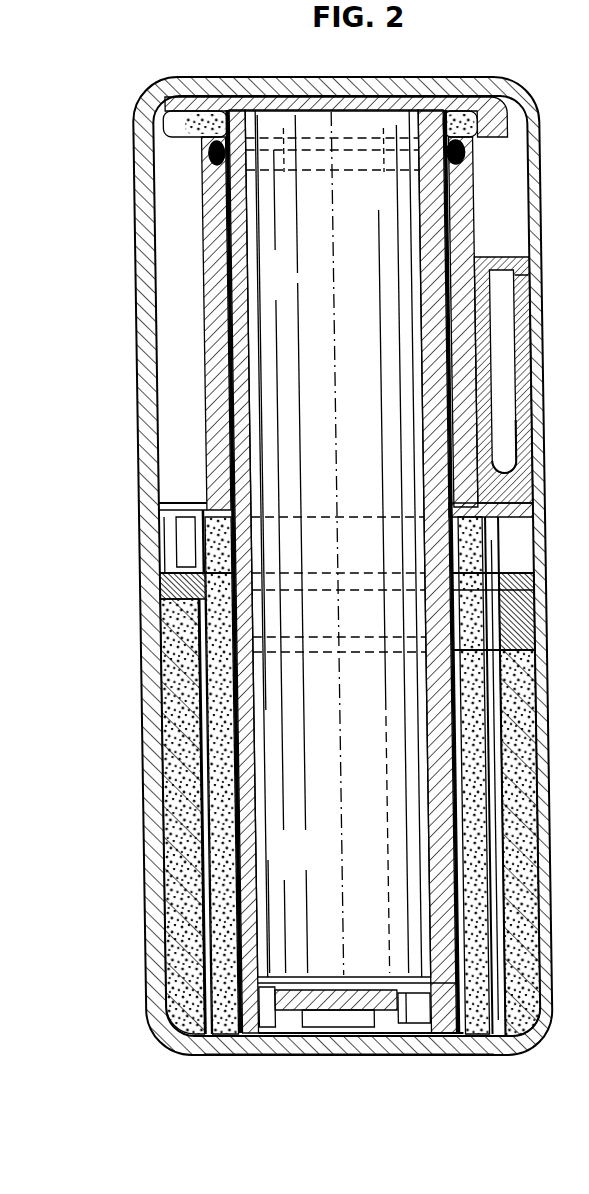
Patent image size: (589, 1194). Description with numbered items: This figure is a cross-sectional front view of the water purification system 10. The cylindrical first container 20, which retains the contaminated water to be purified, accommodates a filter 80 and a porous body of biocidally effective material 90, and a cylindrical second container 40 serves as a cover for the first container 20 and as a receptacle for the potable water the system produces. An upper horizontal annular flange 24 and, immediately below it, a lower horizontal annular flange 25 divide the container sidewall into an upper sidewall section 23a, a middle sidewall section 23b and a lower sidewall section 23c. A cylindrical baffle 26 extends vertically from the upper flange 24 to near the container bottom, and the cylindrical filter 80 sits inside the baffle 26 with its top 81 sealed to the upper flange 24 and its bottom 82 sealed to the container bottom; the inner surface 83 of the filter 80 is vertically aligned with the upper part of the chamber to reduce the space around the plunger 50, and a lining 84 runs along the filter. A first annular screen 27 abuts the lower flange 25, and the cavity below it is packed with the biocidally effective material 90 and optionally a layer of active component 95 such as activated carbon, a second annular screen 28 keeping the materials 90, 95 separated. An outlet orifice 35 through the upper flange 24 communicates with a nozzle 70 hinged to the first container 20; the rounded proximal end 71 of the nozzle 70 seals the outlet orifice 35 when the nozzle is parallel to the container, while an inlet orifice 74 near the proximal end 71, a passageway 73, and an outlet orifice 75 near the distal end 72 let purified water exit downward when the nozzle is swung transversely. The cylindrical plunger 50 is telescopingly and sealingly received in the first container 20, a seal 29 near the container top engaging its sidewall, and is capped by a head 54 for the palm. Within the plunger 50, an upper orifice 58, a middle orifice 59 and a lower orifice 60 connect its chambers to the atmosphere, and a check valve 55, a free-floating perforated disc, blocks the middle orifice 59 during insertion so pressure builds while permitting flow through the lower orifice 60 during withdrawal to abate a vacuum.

The system 10 is at (62, 205).
The first container 20 is at (135, 663).
The upper sidewall section 23a is at (196, 302).
The middle sidewall section 23b is at (165, 528).
The lower sidewall section 23c is at (153, 781).
The upper horizontal annular flange 24 is at (180, 503).
The lower horizontal annular flange 25 is at (160, 575).
The cylindrical baffle 26 is at (200, 946).
The first annular screen 27 is at (160, 603).
The second annular screen 28 is at (536, 645).
The seal 29 is at (462, 153).
The outlet orifice 35 is at (529, 522).
The second container 40 is at (133, 400).
The plunger 50 is at (222, 250).
The head 54 is at (350, 80).
The check valve 55 is at (397, 994).
The upper orifice 58 is at (410, 125).
The middle orifice 59 is at (337, 986).
The lower orifice 60 is at (357, 1030).
The nozzle 70 is at (529, 402).
The proximal end 71 is at (522, 452).
The distal end 72 is at (497, 257).
The passageway 73 is at (500, 372).
The inlet orifice 74 is at (527, 478).
The outlet orifice 75 is at (528, 282).
The filter 80 is at (238, 862).
The top 81 is at (242, 517).
The bottom 82 is at (227, 1056).
The inner surface 83 is at (418, 688).
The lining 84 is at (250, 890).
The porous body of biocidally effective material 90 is at (165, 918).
The active component 95 is at (530, 610).